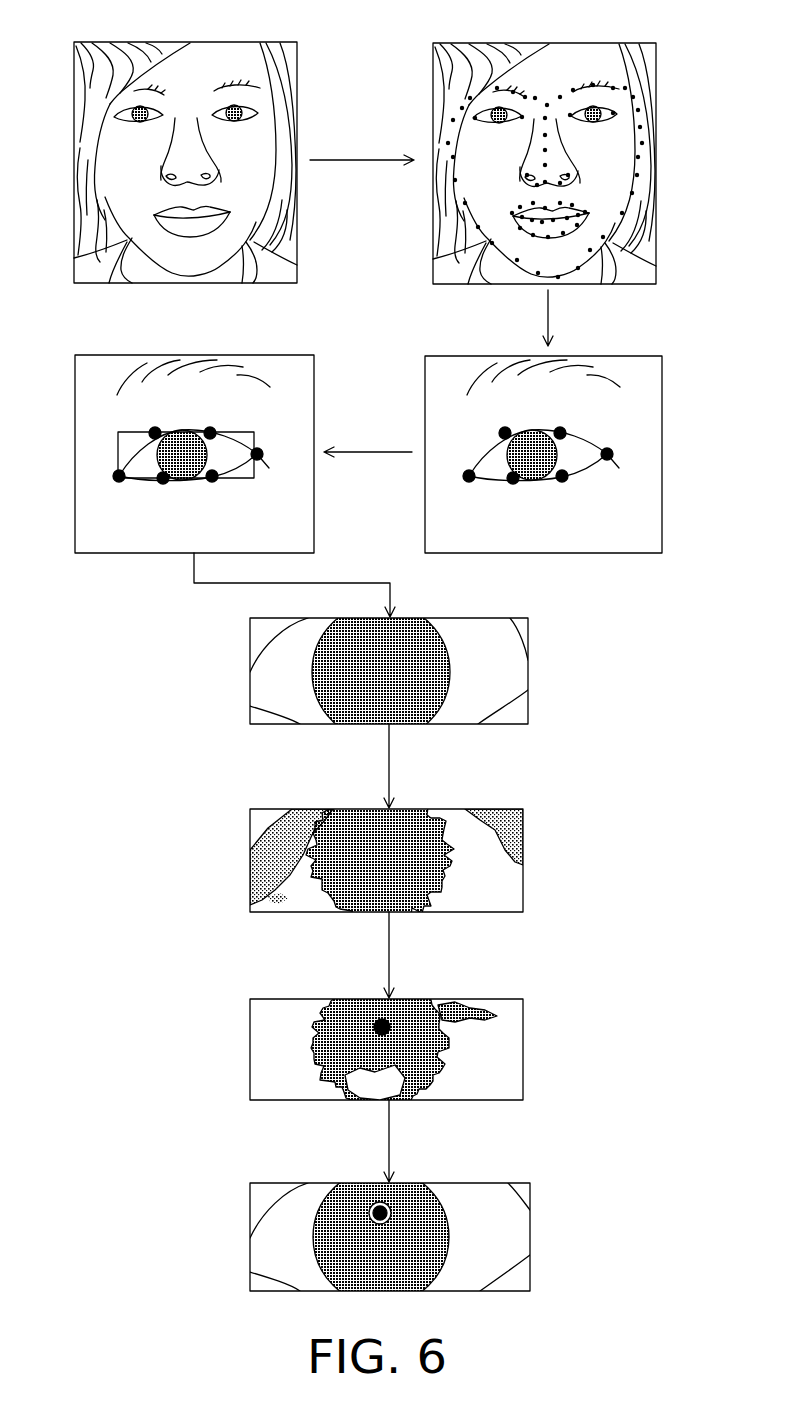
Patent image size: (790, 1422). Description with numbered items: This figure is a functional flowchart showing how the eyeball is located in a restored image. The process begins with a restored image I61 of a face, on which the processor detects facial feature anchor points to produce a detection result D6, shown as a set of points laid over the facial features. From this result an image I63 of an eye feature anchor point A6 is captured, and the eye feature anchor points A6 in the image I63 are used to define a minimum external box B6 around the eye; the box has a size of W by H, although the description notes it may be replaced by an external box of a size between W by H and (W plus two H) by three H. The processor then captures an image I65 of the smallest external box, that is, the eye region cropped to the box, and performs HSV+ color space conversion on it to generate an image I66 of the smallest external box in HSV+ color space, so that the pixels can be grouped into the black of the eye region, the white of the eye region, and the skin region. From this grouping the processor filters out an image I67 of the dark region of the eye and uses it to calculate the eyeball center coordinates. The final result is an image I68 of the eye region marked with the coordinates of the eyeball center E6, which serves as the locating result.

The restored image I61 is at (198, 42).
The detection result of the facial feature anchor point D6 is at (547, 150).
The image of the eye feature anchor point I63 is at (198, 355).
The eye feature anchor point A6 is at (613, 455).
The minimum external box B6 is at (118, 448).
The image of the smallest external box I65 is at (528, 672).
The image of the smallest external box of HSV+ color space I66 is at (523, 862).
The image of the dark region of the eye I67 is at (523, 1050).
The image of the eye region I68 is at (530, 1230).
The eyeball center E6 is at (373, 1190).